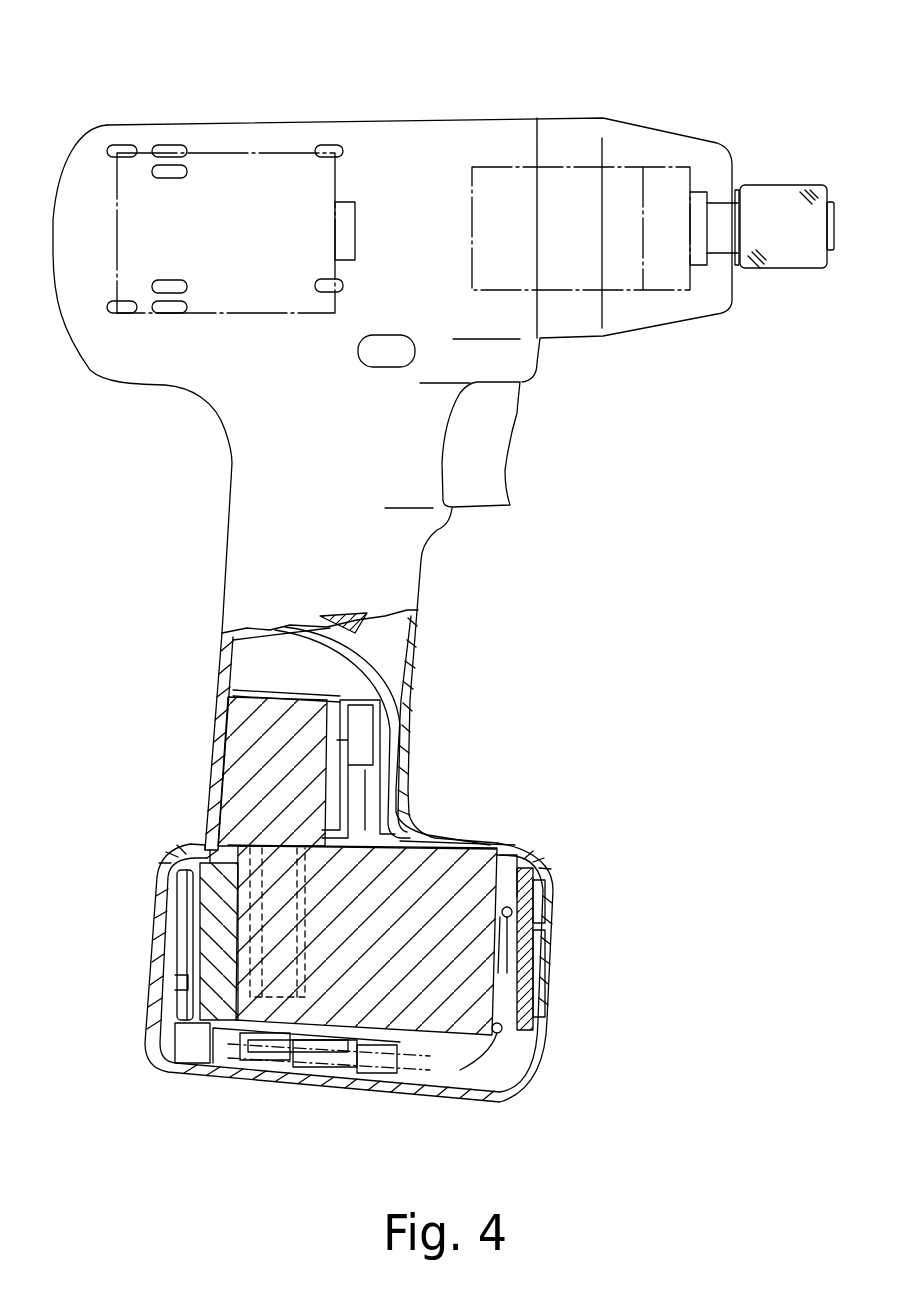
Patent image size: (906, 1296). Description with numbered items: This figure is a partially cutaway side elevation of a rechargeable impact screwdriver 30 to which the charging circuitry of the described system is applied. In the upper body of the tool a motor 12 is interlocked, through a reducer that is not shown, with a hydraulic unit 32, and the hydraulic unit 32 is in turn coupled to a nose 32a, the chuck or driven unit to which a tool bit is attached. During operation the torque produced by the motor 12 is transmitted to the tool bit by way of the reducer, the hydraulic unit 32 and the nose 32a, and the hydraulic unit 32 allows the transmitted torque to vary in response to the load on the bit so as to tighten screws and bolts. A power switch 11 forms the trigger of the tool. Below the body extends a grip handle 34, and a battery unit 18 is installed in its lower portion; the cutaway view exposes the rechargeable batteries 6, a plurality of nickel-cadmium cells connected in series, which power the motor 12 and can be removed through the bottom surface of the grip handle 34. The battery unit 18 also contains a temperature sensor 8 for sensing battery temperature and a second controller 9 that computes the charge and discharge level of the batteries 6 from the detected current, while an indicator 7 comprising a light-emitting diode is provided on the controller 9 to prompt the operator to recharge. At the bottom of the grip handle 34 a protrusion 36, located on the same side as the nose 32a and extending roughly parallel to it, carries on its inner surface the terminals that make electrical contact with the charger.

The impact screwdriver 30 is at (418, 106).
The motor 12 is at (260, 172).
The hydraulic unit 32 is at (583, 177).
The nose 32a is at (770, 198).
The power switch 11 is at (497, 433).
The grip handle 34 is at (413, 577).
The protrusion 36 is at (563, 872).
The battery unit 18 is at (460, 880).
The rechargeable batteries 6 is at (452, 1005).
The indicator 7 is at (165, 1075).
The temperature sensor 8 is at (273, 1083).
The second controller 9 is at (205, 848).